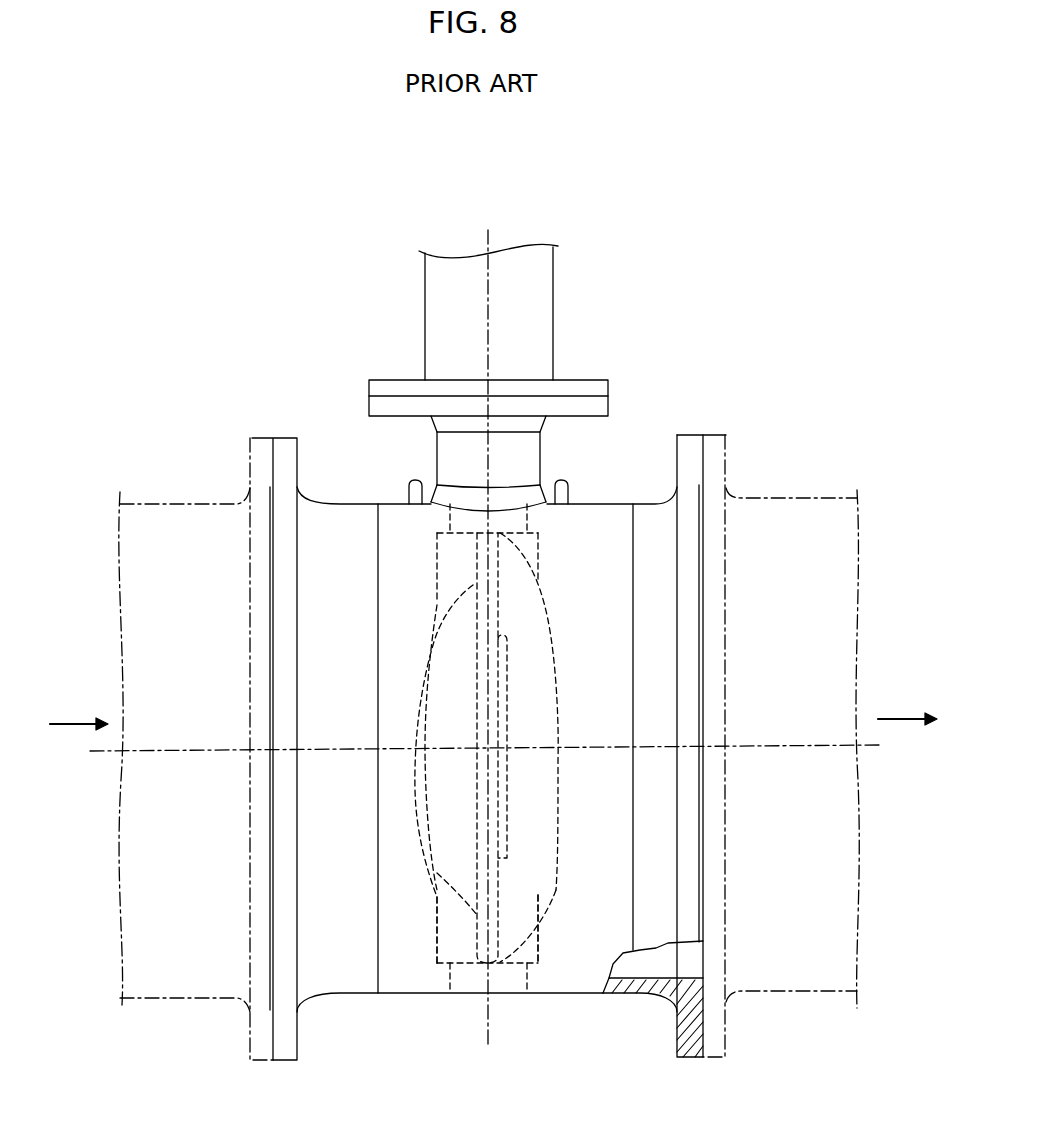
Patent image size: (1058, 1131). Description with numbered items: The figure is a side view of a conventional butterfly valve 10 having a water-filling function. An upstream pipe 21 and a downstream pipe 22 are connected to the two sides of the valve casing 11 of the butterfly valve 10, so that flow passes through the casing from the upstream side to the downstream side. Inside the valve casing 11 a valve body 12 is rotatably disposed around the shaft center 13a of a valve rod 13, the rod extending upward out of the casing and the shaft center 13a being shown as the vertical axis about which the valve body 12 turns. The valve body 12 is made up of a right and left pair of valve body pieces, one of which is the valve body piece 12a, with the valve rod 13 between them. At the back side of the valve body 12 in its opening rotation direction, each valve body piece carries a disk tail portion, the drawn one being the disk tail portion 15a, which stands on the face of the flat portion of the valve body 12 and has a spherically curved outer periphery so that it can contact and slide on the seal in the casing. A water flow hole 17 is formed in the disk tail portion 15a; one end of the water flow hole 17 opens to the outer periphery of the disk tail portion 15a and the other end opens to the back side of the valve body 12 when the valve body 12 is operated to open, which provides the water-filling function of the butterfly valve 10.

The butterfly valve 10 is at (340, 400).
The valve casing 11 is at (341, 949).
The valve body 12 is at (455, 596).
The valve body piece 12a is at (437, 913).
The valve rod 13 is at (527, 530).
The shaft center 13a is at (489, 310).
The disk tail portion 15a is at (543, 893).
The water flow hole 17 is at (508, 680).
The upstream pipe 21 is at (165, 505).
The downstream pipe 22 is at (787, 498).